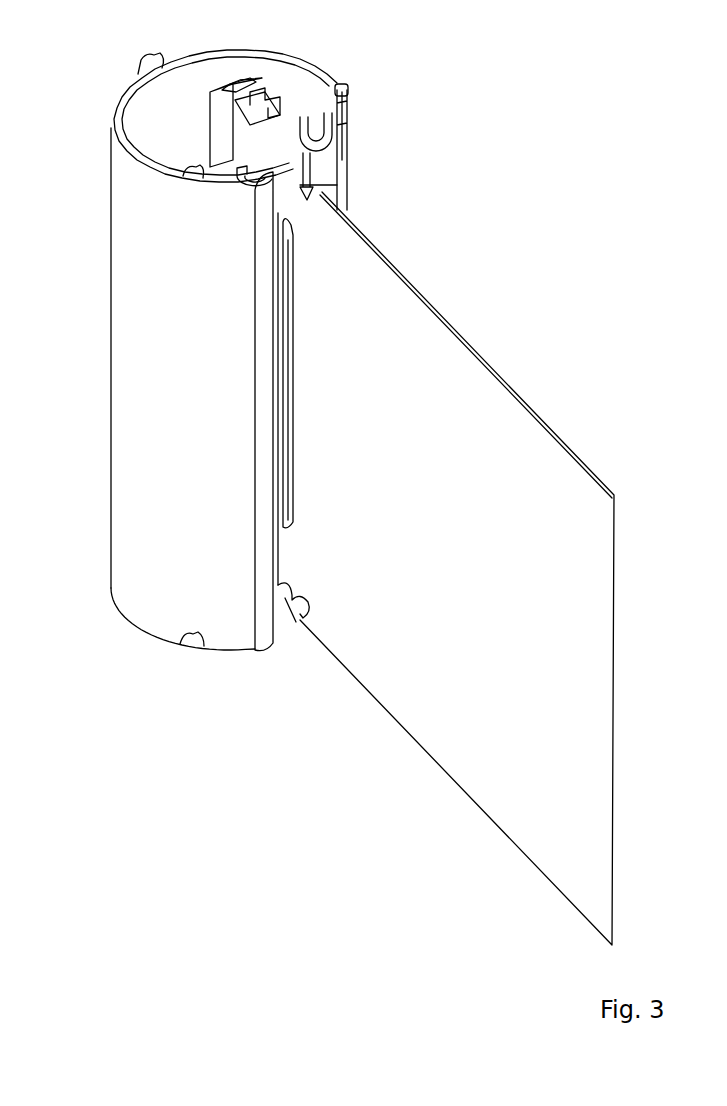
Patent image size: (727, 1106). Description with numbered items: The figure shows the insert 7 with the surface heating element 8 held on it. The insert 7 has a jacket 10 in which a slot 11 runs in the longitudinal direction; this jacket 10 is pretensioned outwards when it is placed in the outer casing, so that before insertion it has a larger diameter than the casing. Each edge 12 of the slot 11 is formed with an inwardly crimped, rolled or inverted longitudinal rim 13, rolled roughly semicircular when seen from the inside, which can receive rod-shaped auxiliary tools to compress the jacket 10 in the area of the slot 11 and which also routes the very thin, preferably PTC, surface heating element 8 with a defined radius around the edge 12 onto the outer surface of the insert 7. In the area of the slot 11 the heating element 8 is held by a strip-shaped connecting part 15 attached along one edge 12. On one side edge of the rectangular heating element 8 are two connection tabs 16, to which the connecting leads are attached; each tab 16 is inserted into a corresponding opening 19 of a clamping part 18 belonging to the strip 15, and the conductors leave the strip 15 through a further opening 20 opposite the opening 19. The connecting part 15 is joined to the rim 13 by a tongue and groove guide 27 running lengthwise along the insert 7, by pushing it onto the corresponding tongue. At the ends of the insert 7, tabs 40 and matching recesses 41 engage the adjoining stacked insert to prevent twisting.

The insert 7 is at (190, 58).
The surface heating element 8 is at (530, 458).
The jacket 10 is at (138, 453).
The slot 11 is at (282, 462).
The edge 12 is at (253, 597).
The rim 13 is at (262, 170).
The strip-shaped connecting part 15 is at (231, 82).
The connection tab 16 is at (285, 197).
The clamping part 18 is at (229, 135).
The opening 19 is at (275, 153).
The further opening 20 is at (242, 96).
The tongue and groove guide 27 is at (282, 99).
The tab 40 is at (162, 68).
The recess 41 is at (193, 640).